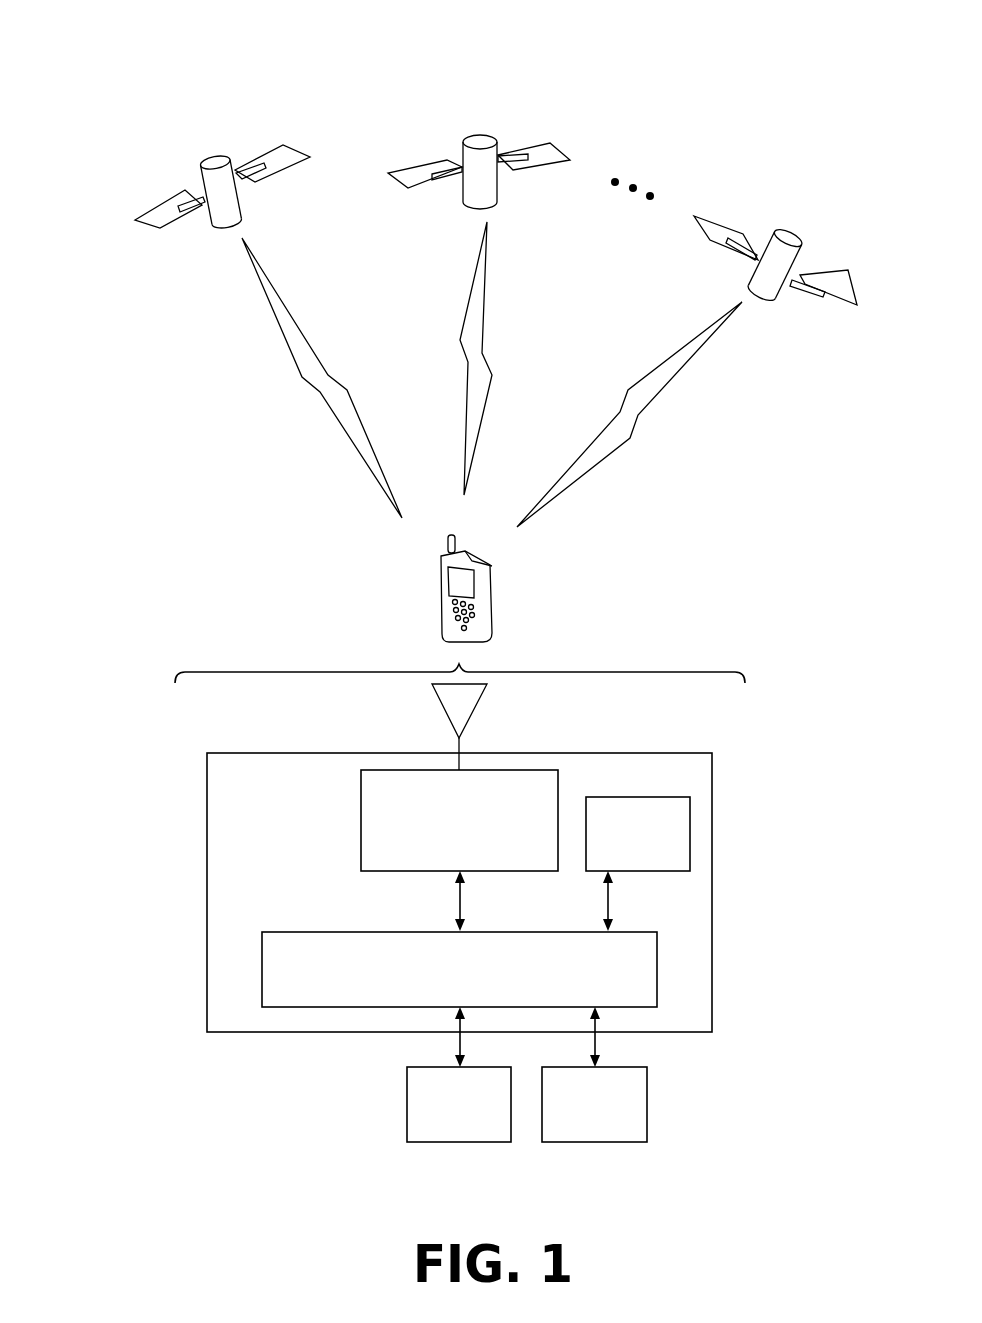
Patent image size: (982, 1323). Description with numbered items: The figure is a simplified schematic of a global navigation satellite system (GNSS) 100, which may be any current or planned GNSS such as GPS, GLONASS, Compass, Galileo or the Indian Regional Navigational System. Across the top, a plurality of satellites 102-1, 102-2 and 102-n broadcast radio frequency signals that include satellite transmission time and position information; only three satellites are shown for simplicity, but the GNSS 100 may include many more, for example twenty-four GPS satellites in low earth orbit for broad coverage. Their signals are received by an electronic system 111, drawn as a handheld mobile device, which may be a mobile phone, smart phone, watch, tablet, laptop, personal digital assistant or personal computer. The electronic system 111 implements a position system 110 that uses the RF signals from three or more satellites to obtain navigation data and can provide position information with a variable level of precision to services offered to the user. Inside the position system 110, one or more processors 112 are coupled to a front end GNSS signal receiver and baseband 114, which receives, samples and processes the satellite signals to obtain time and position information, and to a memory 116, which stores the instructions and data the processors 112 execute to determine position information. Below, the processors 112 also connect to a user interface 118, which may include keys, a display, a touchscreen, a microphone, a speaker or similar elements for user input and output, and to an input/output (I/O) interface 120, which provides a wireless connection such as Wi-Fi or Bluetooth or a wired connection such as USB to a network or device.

The global navigation satellite system 100 is at (96, 78).
The satellite 102-1 is at (200, 160).
The satellite 102-2 is at (472, 141).
The satellite 102-n is at (776, 236).
The electronic system 111 is at (432, 596).
The position system 110 is at (201, 856).
The processor(s) 112 is at (302, 931).
The GNSS signal receiver and baseband 114 is at (360, 849).
The memory 116 is at (648, 871).
The user interface 118 is at (407, 1106).
The input/output (I/O) interface 120 is at (647, 1103).